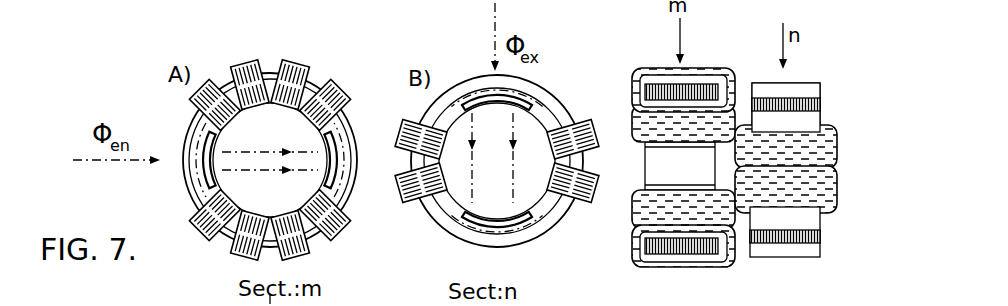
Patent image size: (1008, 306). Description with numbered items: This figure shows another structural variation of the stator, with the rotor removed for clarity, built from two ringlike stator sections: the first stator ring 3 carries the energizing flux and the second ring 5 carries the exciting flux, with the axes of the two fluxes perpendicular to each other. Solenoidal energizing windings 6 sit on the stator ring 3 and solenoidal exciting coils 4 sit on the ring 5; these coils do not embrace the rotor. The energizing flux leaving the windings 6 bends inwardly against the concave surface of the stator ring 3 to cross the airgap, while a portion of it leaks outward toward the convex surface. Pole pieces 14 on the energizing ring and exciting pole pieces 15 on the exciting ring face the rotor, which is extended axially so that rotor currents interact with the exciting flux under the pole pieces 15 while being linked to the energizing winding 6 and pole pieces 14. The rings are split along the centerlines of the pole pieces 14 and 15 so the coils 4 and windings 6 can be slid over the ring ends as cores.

The stator ring 3 is at (343, 118).
The exciting coil 4 is at (568, 120).
The exciting stator ring 5 is at (440, 50).
The energizing winding 6 is at (303, 64).
The pole piece 14 is at (212, 162).
The exciting pole piece 15 is at (503, 98).